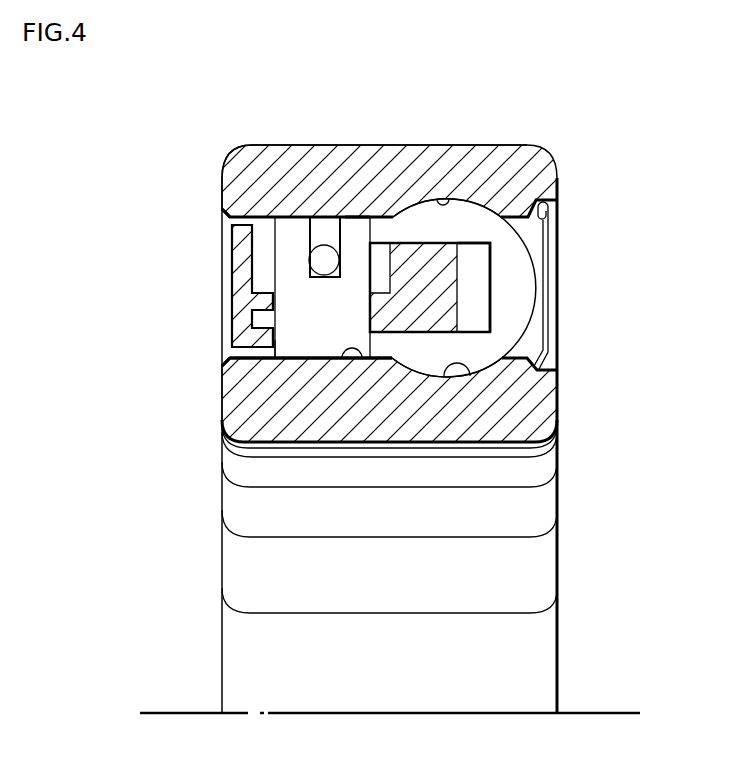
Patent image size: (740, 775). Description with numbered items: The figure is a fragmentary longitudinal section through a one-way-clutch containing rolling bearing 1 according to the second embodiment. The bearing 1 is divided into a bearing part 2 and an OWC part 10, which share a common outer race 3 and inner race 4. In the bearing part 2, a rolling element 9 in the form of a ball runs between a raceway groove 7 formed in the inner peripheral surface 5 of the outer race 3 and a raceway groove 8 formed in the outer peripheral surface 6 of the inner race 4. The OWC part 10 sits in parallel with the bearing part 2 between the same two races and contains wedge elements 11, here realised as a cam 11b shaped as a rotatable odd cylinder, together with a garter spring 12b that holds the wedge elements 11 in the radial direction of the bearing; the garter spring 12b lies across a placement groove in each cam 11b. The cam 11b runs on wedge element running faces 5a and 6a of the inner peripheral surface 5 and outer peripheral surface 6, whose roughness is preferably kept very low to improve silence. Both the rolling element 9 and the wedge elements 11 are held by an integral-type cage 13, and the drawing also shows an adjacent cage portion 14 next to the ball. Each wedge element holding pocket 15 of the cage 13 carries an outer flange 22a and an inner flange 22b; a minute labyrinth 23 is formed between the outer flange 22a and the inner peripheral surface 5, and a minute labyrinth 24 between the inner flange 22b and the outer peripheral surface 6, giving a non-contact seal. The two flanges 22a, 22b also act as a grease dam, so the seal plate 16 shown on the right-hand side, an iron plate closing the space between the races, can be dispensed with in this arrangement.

The OWC containing rolling bearing 1 is at (580, 541).
The bearing part 2 is at (496, 144).
The outer race 3 is at (552, 150).
The inner race 4 is at (536, 390).
The inner peripheral surface of the outer race 5 is at (321, 245).
The wedge element running face 5a is at (357, 215).
The outer peripheral surface of the inner race 6 is at (320, 360).
The wedge element running face 6a is at (352, 362).
The raceway groove 7 is at (443, 197).
The raceway groove 8 is at (470, 357).
The rolling element 9 is at (512, 305).
The OWC part 10 is at (303, 122).
The wedge element 11 is at (307, 350).
The cam 11b is at (278, 362).
The garter spring 12b is at (310, 216).
The integral-type cage 13 is at (484, 282).
The cage pocket frame 14 is at (490, 235).
The wedge element holding pocket 15 is at (272, 308).
The seal plate 16 is at (548, 342).
The outer flange 22a is at (232, 238).
The inner flange 22b is at (242, 340).
The labyrinth 23 is at (212, 213).
The labyrinth 24 is at (212, 355).